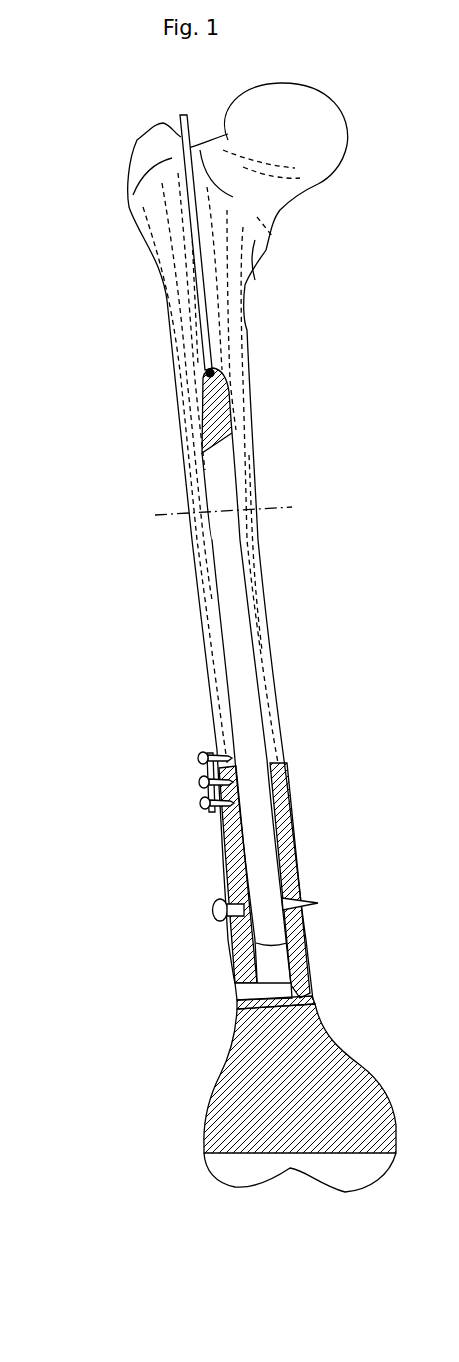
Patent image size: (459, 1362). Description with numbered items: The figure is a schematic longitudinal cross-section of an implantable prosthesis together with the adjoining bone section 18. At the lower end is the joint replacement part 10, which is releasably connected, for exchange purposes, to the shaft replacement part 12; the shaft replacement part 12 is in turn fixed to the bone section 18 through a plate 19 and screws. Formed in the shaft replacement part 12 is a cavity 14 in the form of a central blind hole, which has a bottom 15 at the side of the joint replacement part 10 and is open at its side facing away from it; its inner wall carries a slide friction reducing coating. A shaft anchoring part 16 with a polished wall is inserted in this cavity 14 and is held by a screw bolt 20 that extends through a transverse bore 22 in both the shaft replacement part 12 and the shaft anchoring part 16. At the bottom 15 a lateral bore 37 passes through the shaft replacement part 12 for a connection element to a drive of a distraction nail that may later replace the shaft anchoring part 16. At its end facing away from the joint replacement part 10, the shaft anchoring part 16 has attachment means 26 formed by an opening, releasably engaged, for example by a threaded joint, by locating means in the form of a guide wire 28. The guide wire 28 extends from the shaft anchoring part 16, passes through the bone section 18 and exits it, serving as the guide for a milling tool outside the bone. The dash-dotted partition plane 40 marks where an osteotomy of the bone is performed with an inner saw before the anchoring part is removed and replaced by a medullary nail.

The joint replacement part 10 is at (300, 1108).
The shaft replacement part 12 is at (292, 868).
The cavity 14 is at (273, 965).
The bottom 15 is at (283, 1005).
The shaft anchoring part 16 is at (238, 637).
The bone section 18 is at (185, 293).
The plate 19 is at (202, 772).
The screw bolt 20 is at (215, 905).
The transverse bore 22 is at (220, 922).
The attachment means 26 is at (214, 371).
The locating means / guide wire 28 is at (190, 148).
The lateral bore 37 is at (248, 992).
The partition plane 40 is at (288, 505).